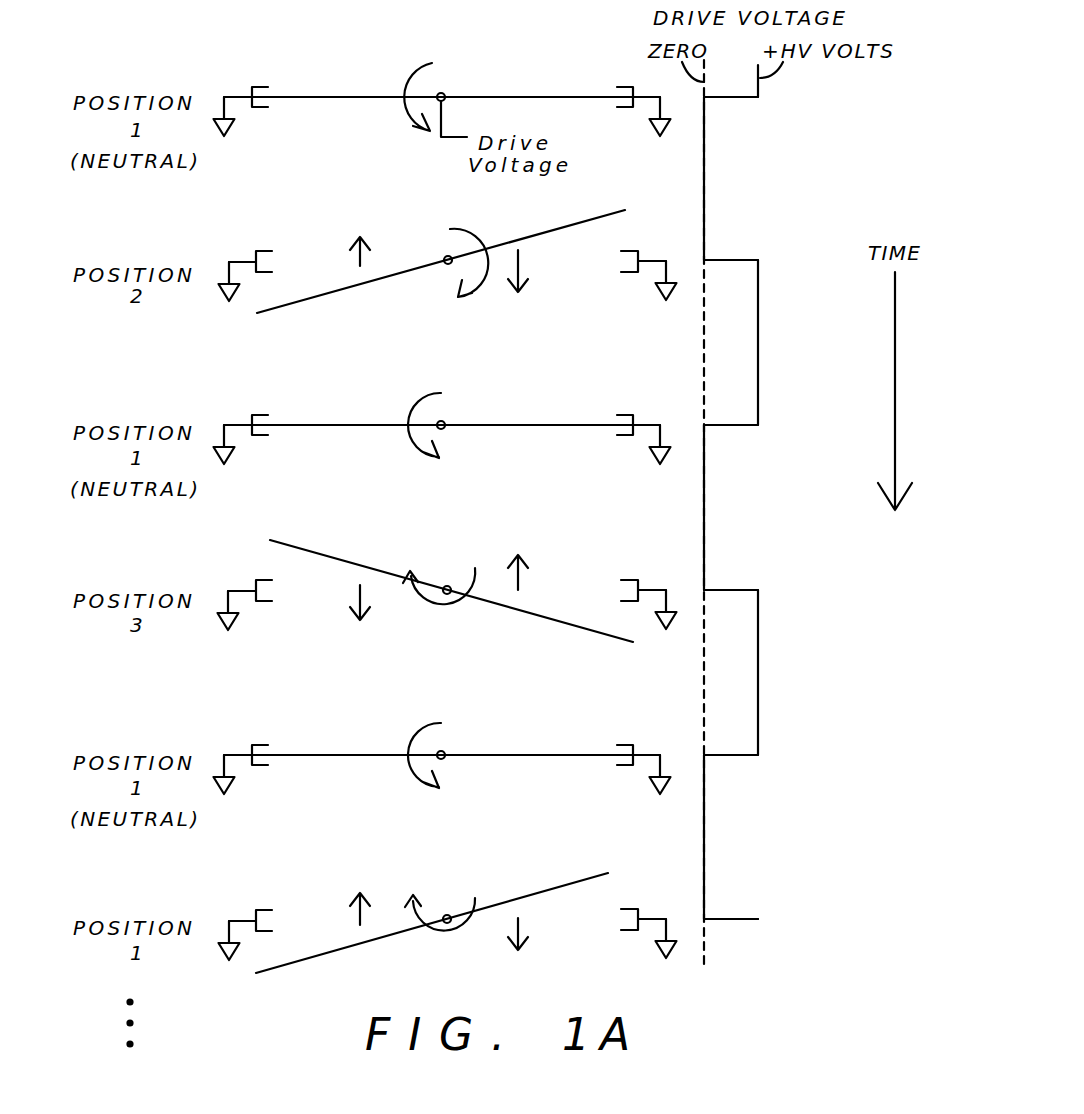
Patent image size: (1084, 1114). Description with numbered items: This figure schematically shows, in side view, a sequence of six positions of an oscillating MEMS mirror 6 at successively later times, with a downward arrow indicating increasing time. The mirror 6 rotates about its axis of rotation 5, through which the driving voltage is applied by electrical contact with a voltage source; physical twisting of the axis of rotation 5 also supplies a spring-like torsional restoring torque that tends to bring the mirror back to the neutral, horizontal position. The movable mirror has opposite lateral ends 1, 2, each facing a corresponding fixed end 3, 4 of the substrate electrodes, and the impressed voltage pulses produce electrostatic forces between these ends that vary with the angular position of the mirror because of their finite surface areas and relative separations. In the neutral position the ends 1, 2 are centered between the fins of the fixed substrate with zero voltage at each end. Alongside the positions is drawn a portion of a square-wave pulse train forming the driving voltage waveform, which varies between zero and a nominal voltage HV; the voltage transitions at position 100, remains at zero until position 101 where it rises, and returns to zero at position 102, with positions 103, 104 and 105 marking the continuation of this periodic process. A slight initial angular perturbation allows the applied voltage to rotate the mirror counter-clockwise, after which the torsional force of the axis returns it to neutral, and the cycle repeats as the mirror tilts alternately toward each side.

The lateral end of the movable mirror 1 is at (300, 102).
The lateral end of the movable mirror 2 is at (585, 102).
The fixed end of the substrate electrode 3 is at (256, 87).
The fixed end of the substrate electrode 4 is at (625, 87).
The axis of rotation 5 is at (446, 94).
The oscillating mirror 6 is at (348, 80).
The position on the driving voltage waveform 100 is at (759, 99).
The position on the driving voltage waveform 101 is at (759, 262).
The position on the driving voltage waveform 102 is at (759, 427).
The time point 103 is at (759, 592).
The time point 104 is at (759, 757).
The time point 105 is at (759, 921).